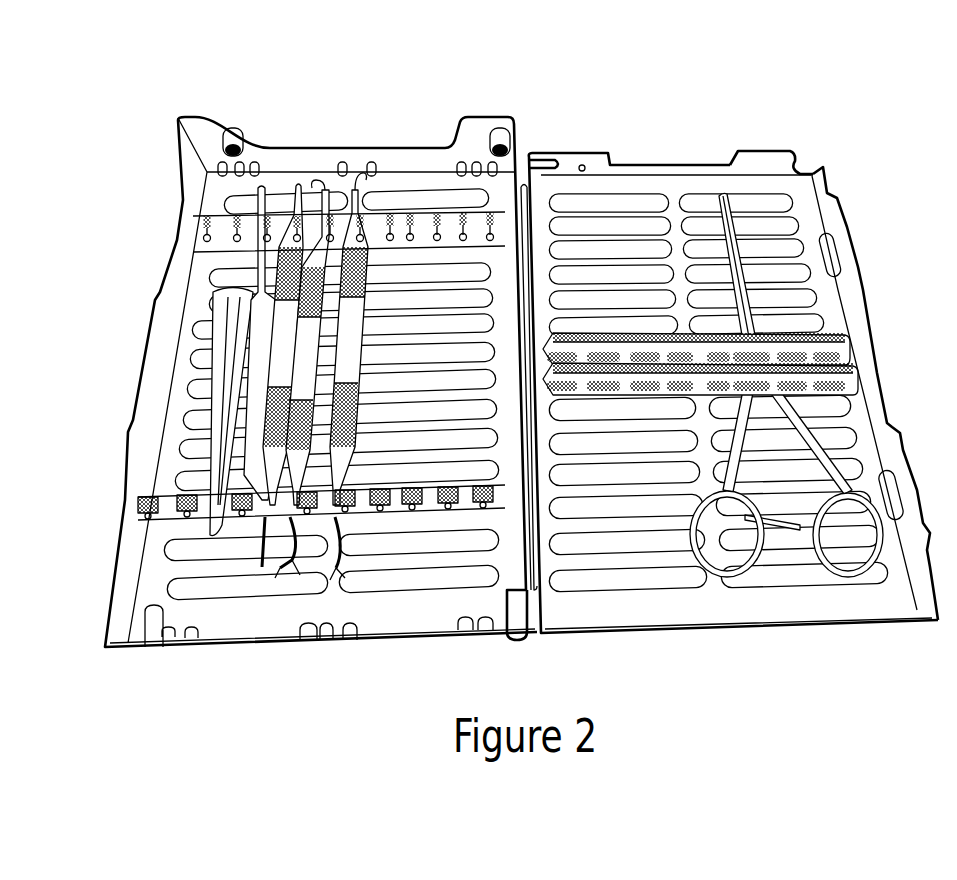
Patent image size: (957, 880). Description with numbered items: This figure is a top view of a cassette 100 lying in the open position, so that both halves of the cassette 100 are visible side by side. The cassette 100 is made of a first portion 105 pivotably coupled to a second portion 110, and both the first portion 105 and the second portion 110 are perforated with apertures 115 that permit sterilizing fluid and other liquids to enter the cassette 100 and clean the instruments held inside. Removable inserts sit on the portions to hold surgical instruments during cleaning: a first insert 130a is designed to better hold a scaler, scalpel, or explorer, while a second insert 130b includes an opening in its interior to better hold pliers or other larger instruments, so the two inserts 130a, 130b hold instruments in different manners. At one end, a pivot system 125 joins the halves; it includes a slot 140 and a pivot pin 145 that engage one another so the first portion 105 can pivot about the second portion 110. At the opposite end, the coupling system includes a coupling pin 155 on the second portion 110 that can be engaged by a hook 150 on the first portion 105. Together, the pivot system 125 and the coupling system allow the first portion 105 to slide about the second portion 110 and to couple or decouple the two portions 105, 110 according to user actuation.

The cassette 100 is at (500, 365).
The first portion 105 is at (823, 167).
The second portion 110 is at (318, 637).
The apertures 115 is at (640, 547).
The pivot system 125 is at (478, 110).
The first insert 130a is at (143, 515).
The second insert 130b is at (827, 335).
The slot 140 is at (532, 163).
The pivot pin 145 is at (510, 118).
The hook 150 is at (788, 152).
The coupling pin 155 is at (235, 128).